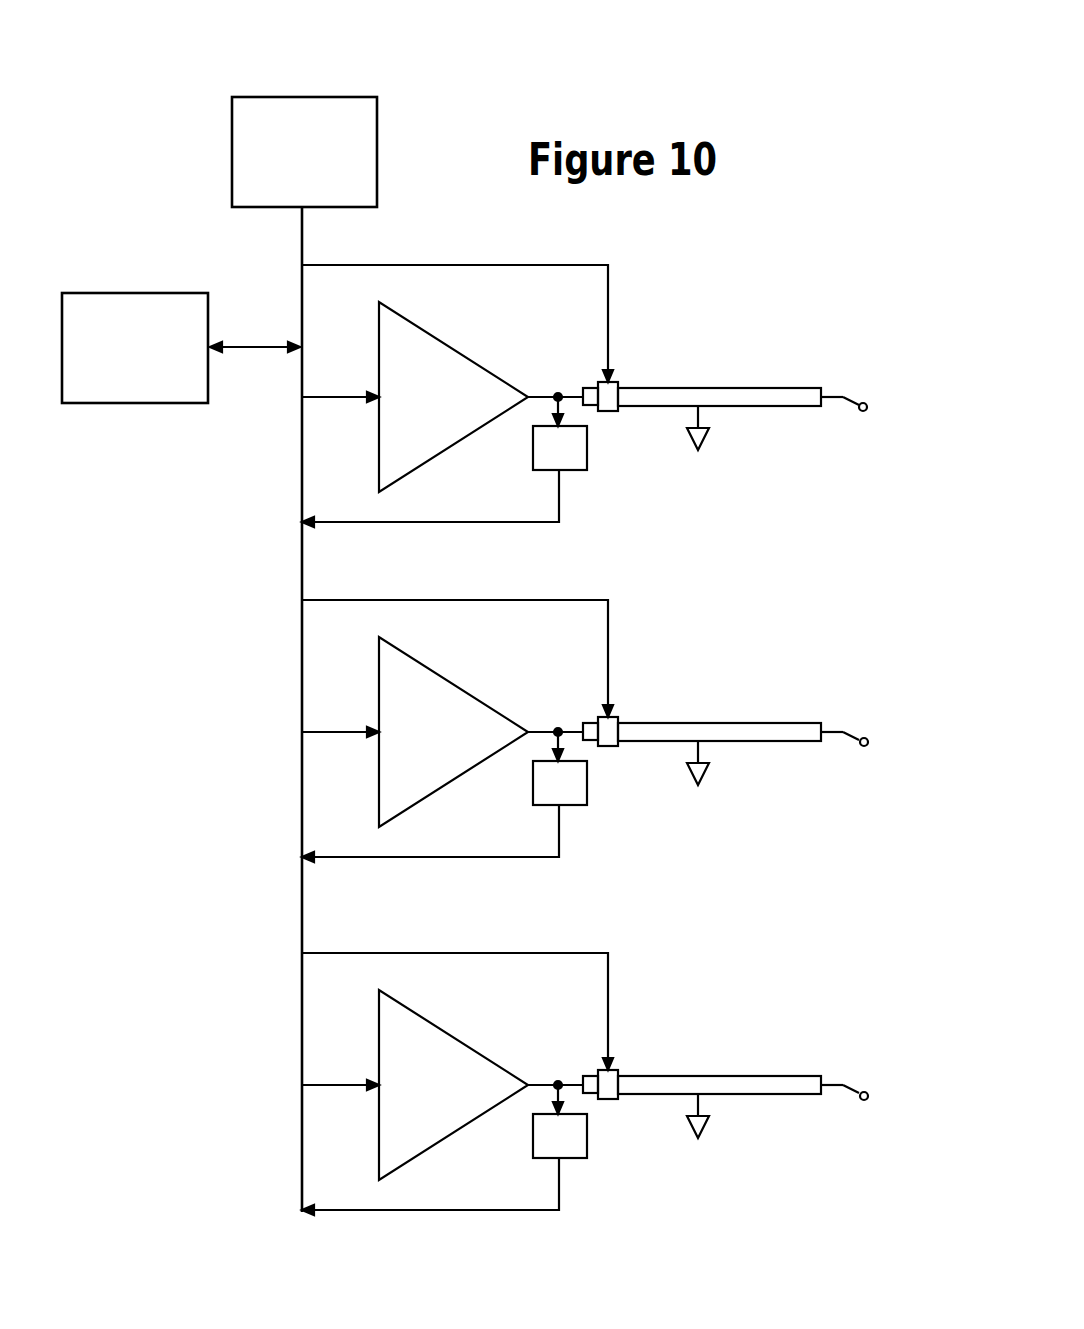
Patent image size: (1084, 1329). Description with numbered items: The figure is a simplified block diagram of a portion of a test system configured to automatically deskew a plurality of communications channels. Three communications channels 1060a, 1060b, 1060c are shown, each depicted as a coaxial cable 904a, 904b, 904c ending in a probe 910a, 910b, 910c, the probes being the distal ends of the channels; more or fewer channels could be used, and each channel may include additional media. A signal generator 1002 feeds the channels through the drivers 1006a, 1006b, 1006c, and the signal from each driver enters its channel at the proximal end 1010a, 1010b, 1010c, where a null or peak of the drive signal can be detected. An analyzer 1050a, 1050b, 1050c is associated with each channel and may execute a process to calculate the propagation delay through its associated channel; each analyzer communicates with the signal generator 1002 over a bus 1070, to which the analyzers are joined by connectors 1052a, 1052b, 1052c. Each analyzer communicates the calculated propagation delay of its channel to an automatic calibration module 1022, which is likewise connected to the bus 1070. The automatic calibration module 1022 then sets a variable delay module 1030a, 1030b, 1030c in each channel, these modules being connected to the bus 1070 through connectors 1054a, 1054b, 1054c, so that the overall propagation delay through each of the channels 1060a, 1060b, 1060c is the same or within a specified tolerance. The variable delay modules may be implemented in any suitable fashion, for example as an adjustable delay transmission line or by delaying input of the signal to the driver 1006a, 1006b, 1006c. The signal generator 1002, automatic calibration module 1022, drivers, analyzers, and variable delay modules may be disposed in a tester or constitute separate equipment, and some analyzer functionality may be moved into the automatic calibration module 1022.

The signal generator 1002 is at (332, 97).
The automatic calibration module 1022 is at (142, 293).
The bus 1070 is at (302, 472).
The connector 1054a is at (448, 265).
The connector 1054b is at (450, 600).
The connector 1054c is at (450, 953).
The driver 1006a is at (477, 327).
The driver 1006b is at (478, 662).
The driver 1006c is at (478, 1016).
The proximal end 1010a is at (583, 393).
The proximal end 1010b is at (583, 728).
The proximal end 1010c is at (583, 1081).
The variable delay module 1030a is at (615, 412).
The variable delay module 1030b is at (615, 747).
The variable delay module 1030c is at (615, 1100).
The analyzer 1050a is at (533, 438).
The analyzer 1050b is at (533, 773).
The analyzer 1050c is at (533, 1126).
The connector 1052a is at (508, 522).
The connector 1052b is at (508, 857).
The connector 1052c is at (508, 1210).
The coaxial cable 904a is at (737, 388).
The coaxial cable 904b is at (737, 723).
The coaxial cable 904c is at (740, 1076).
The communications channel 1060a is at (775, 370).
The communications channel 1060b is at (780, 697).
The communications channel 1060c is at (781, 1045).
The probe 910a is at (862, 412).
The probe 910b is at (863, 747).
The probe 910c is at (863, 1102).